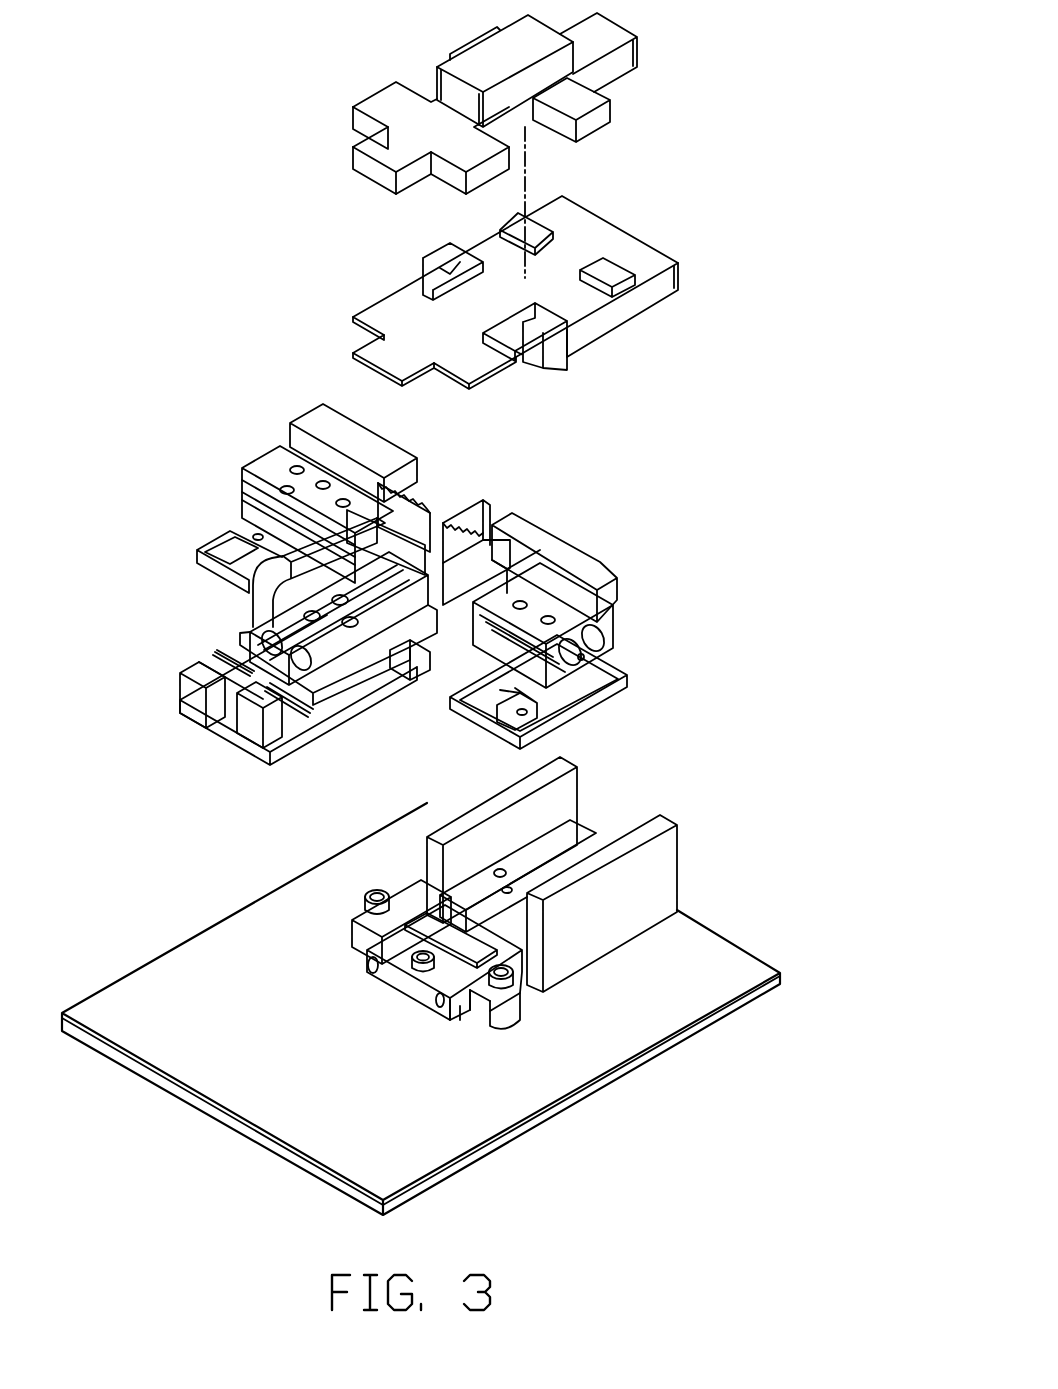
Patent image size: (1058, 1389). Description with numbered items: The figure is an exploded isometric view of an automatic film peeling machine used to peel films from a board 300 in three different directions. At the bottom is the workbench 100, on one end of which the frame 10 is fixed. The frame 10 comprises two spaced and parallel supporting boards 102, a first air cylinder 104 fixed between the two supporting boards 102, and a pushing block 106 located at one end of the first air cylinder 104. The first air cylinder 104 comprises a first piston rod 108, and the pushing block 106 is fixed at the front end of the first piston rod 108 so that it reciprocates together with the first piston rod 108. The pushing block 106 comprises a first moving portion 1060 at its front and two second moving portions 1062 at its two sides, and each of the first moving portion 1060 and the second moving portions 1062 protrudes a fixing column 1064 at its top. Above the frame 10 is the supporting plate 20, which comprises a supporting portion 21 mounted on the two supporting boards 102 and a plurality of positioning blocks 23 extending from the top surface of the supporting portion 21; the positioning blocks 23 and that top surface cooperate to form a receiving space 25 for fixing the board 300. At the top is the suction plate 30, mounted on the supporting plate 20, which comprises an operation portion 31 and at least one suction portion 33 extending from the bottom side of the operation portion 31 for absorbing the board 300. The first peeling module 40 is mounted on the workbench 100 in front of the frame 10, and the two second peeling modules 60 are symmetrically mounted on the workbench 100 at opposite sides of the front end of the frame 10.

The frame 10 is at (396, 995).
The workbench 100 is at (145, 1007).
The supporting boards 102 is at (665, 850).
The first air cylinder 104 is at (552, 850).
The pushing block 106 is at (410, 1029).
The first moving portion 1060 is at (450, 985).
The second moving portions 1062 is at (510, 1017).
The fixing column 1064 is at (383, 947).
The first piston rod 108 is at (503, 950).
The supporting plate 20 is at (560, 280).
The supporting portion 21 is at (675, 280).
The positioning blocks 23 is at (617, 282).
The receiving space 25 is at (590, 320).
The board 300 is at (593, 245).
The suction plate 30 is at (612, 37).
The operation portion 31 is at (487, 63).
The suction portion 33 is at (603, 110).
The first peeling module 40 is at (192, 690).
The second peeling modules 60 is at (295, 417).